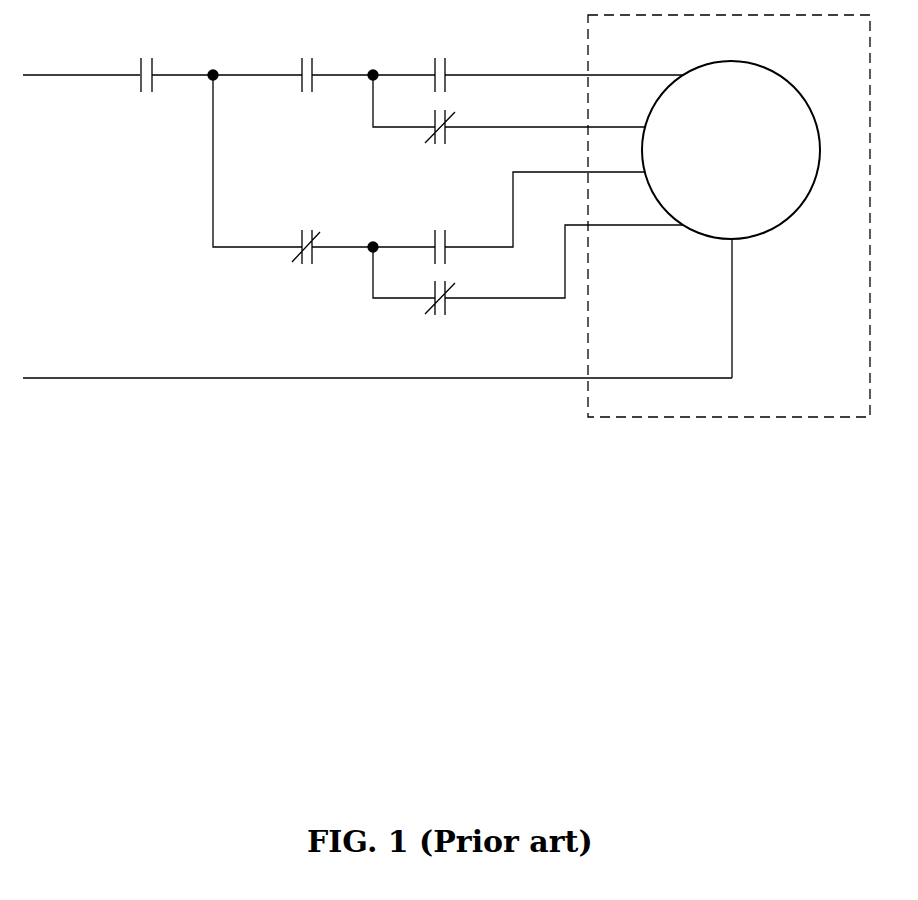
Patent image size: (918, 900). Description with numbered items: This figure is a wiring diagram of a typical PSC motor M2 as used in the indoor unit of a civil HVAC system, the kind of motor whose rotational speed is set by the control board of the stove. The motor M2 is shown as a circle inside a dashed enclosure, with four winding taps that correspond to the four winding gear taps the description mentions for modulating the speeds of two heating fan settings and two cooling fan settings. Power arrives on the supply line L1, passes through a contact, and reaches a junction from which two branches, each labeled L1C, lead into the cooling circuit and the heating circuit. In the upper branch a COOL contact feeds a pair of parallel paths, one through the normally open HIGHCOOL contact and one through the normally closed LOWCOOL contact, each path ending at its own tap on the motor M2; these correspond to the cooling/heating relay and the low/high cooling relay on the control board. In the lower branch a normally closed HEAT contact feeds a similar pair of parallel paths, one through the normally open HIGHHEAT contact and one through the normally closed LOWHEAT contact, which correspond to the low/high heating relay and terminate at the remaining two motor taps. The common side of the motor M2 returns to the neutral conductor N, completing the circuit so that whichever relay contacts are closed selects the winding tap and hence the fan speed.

The line 1 supply conductor L1 is at (118, 69).
The line 1 contactor wire L1C is at (255, 147).
The cool mode contact COOL is at (328, 57).
The high cool normally-open contact HIGHCOOL is at (525, 57).
The low cool normally-closed contact LOWCOOL is at (509, 125).
The heat mode normally-closed contact HEAT is at (328, 234).
The high heat normally-open contact HIGHHEAT is at (506, 218).
The low heat normally-closed contact LOWHEAT is at (528, 286).
The blower motor M2 is at (731, 219).
The neutral conductor N is at (377, 363).